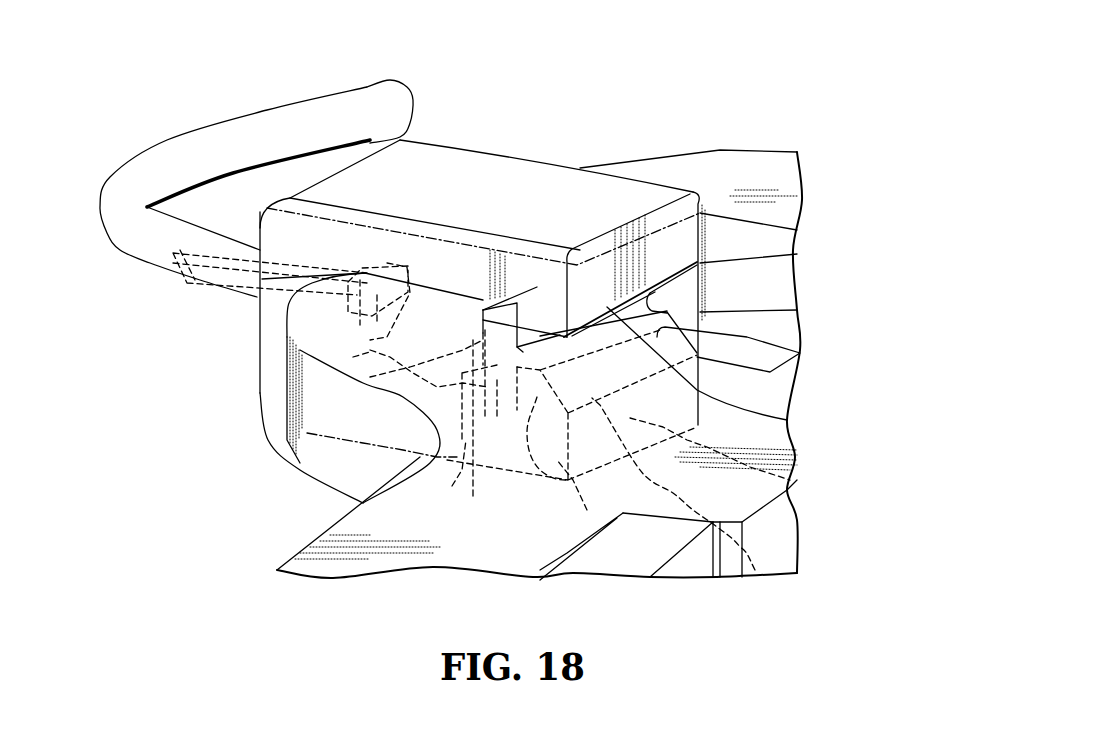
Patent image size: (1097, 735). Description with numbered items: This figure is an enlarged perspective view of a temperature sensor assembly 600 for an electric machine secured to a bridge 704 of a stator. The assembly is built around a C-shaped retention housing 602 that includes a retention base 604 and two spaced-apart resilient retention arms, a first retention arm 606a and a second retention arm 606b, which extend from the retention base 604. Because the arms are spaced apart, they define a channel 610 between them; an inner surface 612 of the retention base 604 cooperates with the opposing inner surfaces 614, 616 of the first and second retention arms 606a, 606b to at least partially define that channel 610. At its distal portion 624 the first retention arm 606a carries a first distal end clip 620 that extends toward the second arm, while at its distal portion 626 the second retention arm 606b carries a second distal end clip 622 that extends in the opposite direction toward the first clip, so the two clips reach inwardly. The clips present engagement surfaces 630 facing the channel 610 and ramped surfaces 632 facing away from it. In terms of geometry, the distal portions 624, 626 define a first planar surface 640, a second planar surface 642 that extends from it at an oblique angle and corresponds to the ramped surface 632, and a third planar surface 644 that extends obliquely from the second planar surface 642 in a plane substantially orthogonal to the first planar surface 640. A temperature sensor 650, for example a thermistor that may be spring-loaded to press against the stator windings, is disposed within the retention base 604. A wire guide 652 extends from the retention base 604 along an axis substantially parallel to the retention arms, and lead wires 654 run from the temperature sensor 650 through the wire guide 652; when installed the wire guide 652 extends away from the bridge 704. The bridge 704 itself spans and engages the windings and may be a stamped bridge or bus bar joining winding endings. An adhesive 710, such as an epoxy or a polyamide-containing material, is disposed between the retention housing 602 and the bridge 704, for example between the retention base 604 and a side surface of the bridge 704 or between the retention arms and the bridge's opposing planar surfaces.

The temperature sensor assembly 600 is at (218, 98).
The retention housing 602 is at (577, 81).
The retention base 604 is at (320, 290).
The first retention arm 606a is at (503, 200).
The second retention arm 606b is at (657, 573).
The channel 610 is at (335, 478).
The inner surface 612 is at (353, 357).
The inner surface 614 is at (483, 300).
The inner surface 616 is at (473, 463).
The first distal end clip 620 is at (537, 310).
The second distal end clip 622 is at (587, 510).
The distal portion 624 is at (637, 193).
The distal portion 626 is at (755, 570).
The engagement surface 630 is at (532, 470).
The ramped surface 632 is at (787, 420).
The first planar surface 640 is at (790, 480).
The second planar surface 642 is at (850, 290).
The third planar surface 644 is at (797, 253).
The temperature sensor 650 is at (363, 270).
The wire guide 652 is at (130, 163).
The lead wires 654 is at (200, 283).
The bridge 704 is at (780, 533).
The adhesive 710 is at (285, 417).